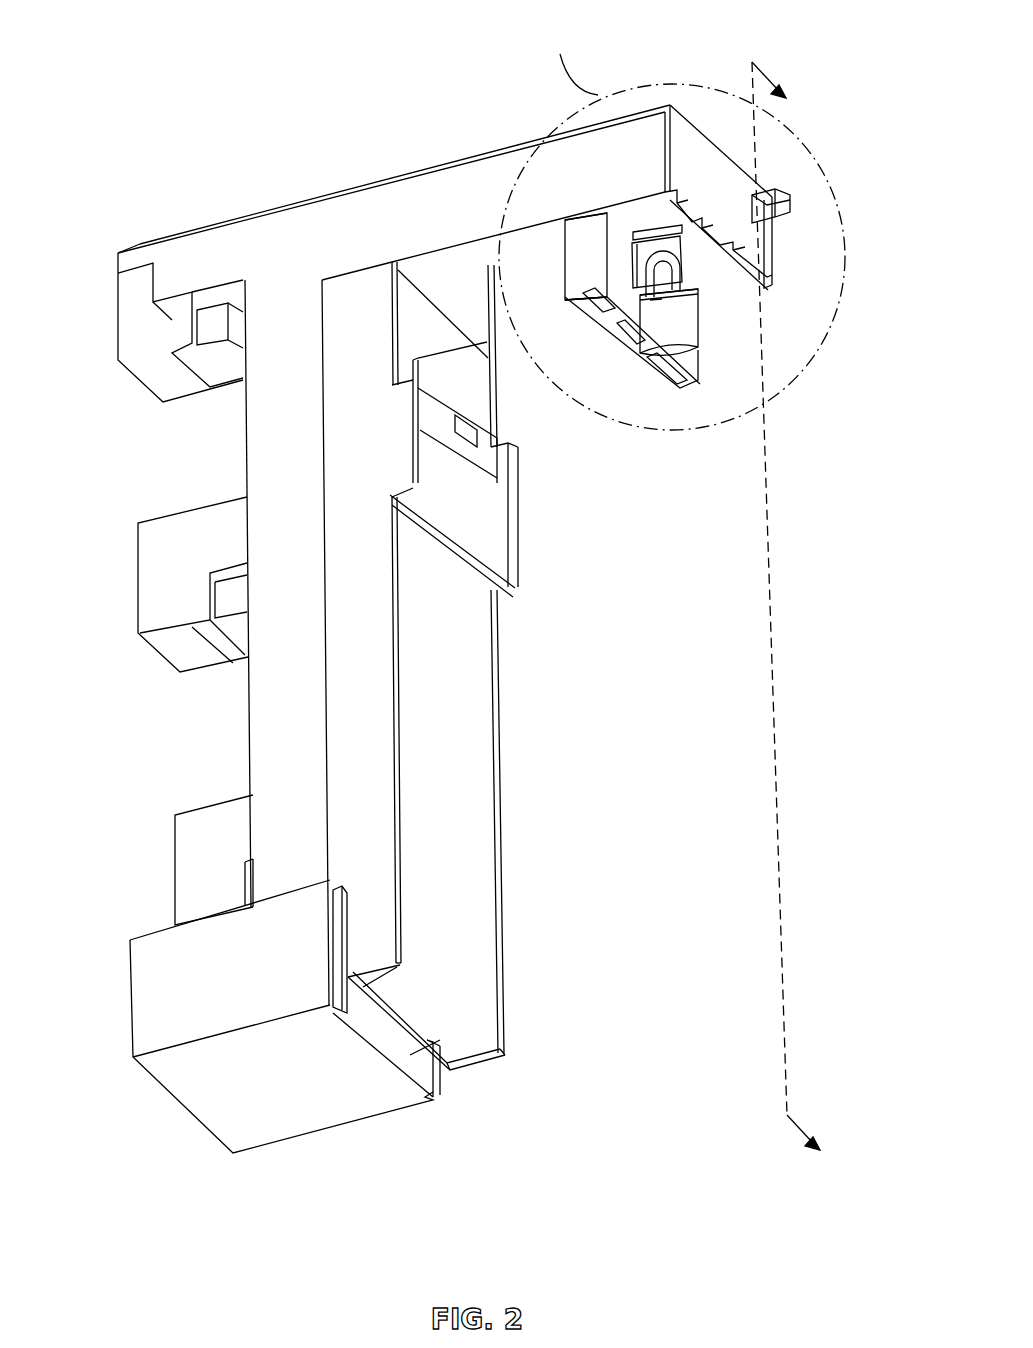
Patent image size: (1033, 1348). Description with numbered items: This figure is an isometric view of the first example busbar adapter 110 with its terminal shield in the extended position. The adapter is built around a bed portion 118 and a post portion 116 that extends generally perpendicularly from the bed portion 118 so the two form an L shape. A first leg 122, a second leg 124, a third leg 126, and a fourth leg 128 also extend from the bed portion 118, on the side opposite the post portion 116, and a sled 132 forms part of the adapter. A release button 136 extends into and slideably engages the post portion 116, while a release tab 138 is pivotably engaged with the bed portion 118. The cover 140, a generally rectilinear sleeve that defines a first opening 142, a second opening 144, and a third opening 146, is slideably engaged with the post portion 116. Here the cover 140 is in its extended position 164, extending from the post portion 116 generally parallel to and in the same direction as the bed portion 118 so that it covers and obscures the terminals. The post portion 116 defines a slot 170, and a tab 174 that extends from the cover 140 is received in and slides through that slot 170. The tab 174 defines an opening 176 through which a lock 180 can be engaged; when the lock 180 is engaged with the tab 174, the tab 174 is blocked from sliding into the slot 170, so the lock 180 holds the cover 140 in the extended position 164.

The first example busbar adapter 110 is at (180, 58).
The post portion 116 is at (493, 185).
The bed portion 118 is at (298, 800).
The first leg 122 is at (163, 292).
The second leg 124 is at (165, 567).
The third leg 126 is at (205, 853).
The fourth leg 128 is at (165, 985).
The sled 132 is at (380, 572).
The release button 136 is at (787, 203).
The release tab 138 is at (458, 1066).
The cover 140 is at (696, 360).
The first opening 142 is at (598, 315).
The second opening 144 is at (632, 345).
The third opening 146 is at (665, 375).
The extended position 164 is at (745, 362).
The slot 170 is at (647, 222).
The tab 174 is at (643, 252).
The opening 176 is at (686, 263).
The lock 180 is at (656, 300).